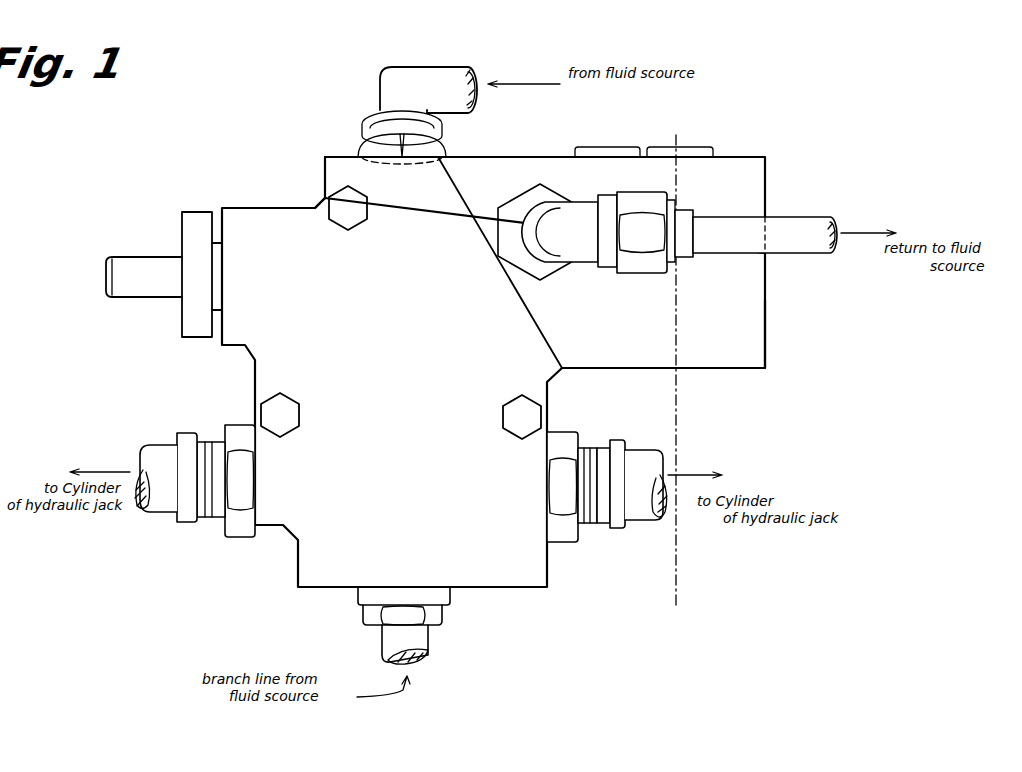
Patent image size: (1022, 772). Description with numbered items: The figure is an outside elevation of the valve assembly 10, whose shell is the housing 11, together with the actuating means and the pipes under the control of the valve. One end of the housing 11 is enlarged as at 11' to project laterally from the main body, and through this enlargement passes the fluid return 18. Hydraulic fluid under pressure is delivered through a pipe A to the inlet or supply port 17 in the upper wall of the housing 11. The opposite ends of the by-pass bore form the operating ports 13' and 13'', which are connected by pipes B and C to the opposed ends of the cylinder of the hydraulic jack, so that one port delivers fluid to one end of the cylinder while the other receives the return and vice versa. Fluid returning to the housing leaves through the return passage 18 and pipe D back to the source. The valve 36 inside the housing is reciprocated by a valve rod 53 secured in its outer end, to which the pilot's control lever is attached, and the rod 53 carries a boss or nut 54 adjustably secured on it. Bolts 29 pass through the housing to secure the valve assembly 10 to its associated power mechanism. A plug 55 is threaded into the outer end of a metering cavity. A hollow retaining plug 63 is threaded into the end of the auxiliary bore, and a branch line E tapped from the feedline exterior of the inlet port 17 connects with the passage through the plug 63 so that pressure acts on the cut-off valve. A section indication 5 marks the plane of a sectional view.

The valve assembly 10 is at (493, 372).
The housing 11 is at (295, 174).
The enlargement of housing 11' is at (732, 351).
The port 13' is at (216, 469).
The port 13'' is at (586, 477).
The inlet port 17 is at (416, 158).
The fluid return passage 18 is at (523, 216).
The bolts 29 is at (350, 205).
The valve 36 is at (214, 262).
The valve rod 53 is at (144, 277).
The boss or nut 54 is at (206, 212).
The plug 55 is at (622, 140).
The hollow retaining plug 63 is at (430, 600).
The section line 5- 5 is at (710, 138).
The pipe A is at (447, 84).
The pipe B is at (158, 458).
The pipe C is at (655, 465).
The pipe D is at (736, 228).
The branch line E is at (392, 645).